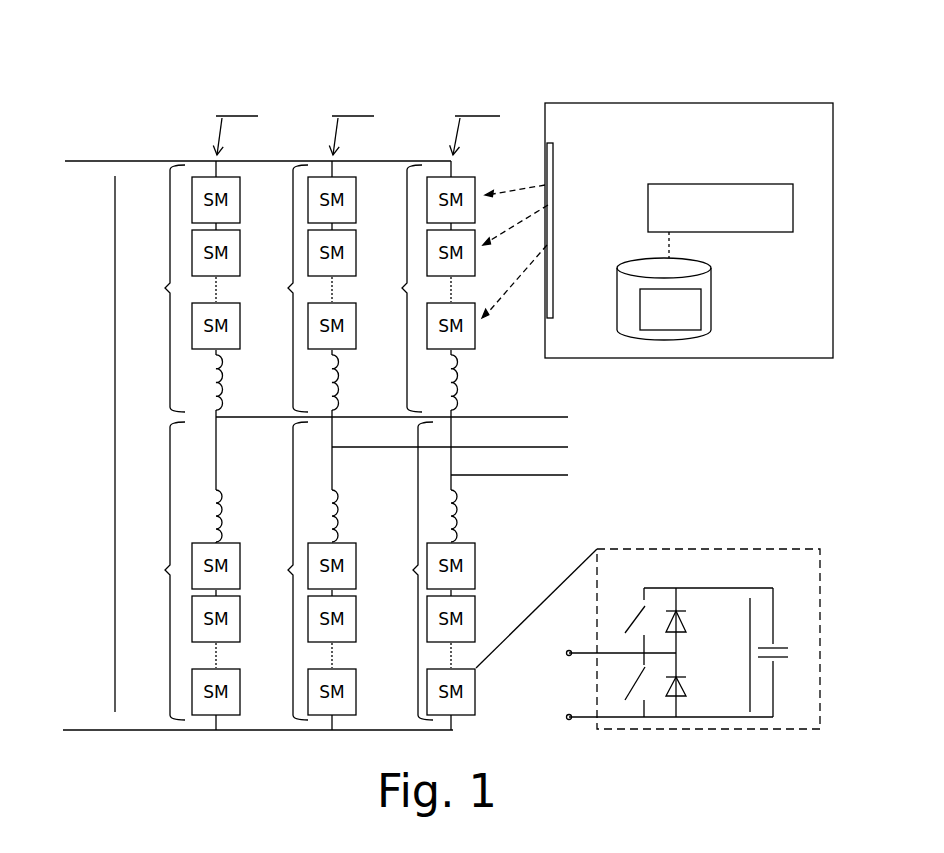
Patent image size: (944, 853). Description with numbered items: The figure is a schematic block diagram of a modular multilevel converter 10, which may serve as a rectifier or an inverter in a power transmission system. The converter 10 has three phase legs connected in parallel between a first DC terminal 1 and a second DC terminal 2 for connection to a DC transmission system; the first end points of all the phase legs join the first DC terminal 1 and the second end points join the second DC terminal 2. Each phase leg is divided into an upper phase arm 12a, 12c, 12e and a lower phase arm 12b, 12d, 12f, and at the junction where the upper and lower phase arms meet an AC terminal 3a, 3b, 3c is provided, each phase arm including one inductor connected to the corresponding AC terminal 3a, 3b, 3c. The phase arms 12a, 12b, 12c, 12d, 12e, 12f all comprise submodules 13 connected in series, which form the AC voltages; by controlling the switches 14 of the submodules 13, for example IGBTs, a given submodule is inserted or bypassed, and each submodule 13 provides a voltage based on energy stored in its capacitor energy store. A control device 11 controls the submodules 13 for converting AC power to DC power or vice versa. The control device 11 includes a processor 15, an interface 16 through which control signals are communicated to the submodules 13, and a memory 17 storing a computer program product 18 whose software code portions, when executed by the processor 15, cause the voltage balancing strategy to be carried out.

The first DC terminal 1 is at (123, 158).
The second DC terminal 2 is at (93, 732).
The AC terminal 3a is at (495, 415).
The AC terminal 3b is at (487, 447).
The AC terminal 3c is at (549, 477).
The modular multilevel converter 10 is at (446, 65).
The control device 11 is at (680, 103).
The upper phase arm 12a is at (165, 288).
The lower phase arm 12b is at (165, 570).
The upper phase arm 12c is at (288, 288).
The lower phase arm 12d is at (288, 570).
The upper phase arm 12e is at (402, 288).
The lower phase arm 12f is at (413, 570).
The submodule 13 is at (476, 578).
The switch 14 is at (627, 618).
The processor 15 is at (648, 212).
The interface 16 is at (553, 268).
The memory 17 is at (711, 308).
The computer program product 18 is at (658, 324).